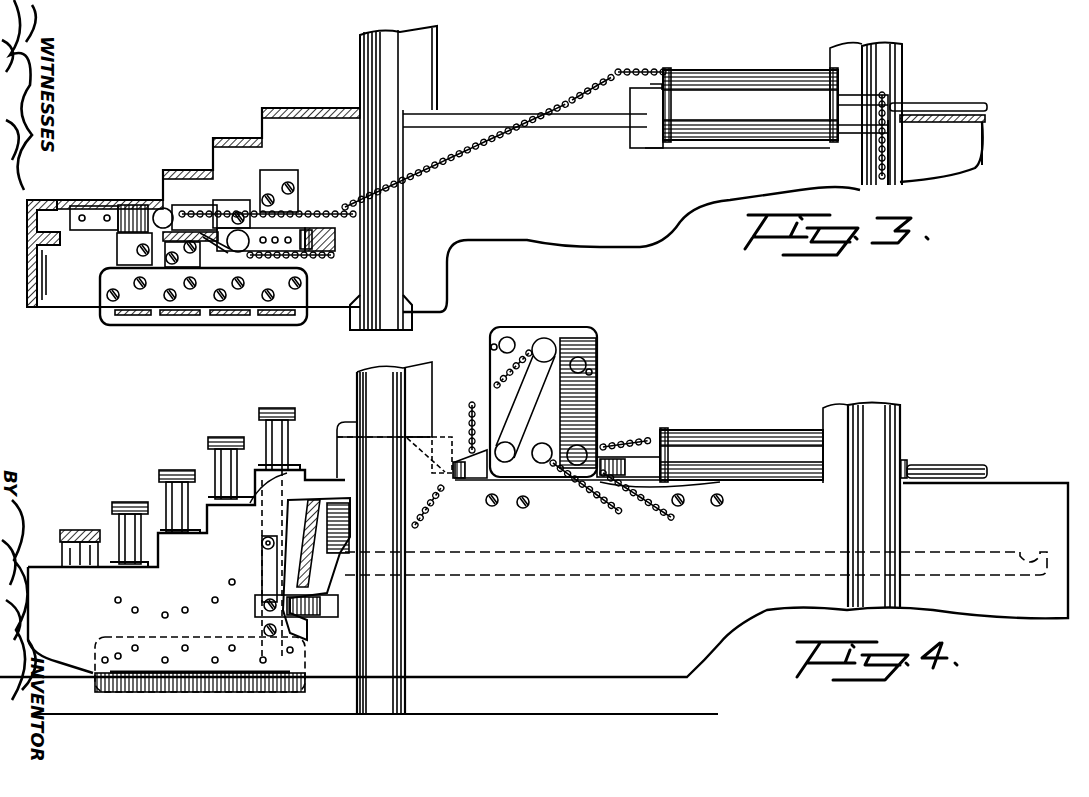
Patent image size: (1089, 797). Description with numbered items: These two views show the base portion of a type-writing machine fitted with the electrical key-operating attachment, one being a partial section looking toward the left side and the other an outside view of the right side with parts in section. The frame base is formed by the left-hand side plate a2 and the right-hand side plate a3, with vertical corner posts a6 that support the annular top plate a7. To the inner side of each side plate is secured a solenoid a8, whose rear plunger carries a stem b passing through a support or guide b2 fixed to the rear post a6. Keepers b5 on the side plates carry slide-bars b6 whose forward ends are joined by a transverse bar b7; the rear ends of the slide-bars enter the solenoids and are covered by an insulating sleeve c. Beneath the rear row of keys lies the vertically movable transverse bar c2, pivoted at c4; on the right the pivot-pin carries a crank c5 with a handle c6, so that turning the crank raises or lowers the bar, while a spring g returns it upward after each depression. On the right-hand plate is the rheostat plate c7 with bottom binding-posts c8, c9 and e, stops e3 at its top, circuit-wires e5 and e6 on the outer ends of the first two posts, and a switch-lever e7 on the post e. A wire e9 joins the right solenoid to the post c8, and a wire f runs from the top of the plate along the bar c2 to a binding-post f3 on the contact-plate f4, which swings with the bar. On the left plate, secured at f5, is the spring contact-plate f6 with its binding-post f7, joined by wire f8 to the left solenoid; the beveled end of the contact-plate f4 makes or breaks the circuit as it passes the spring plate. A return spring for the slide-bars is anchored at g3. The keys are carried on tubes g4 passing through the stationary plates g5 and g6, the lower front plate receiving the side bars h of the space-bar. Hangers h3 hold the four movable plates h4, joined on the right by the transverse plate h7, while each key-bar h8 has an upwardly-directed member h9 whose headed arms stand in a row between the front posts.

In FIG. 3, the left-hand side plate a2 is at (520, 210).
In FIG. 4, the right-hand side plate a3 is at (534, 592).
In FIG. 3, the vertical side or corner posts a6 is at (400, 58).
In FIG. 4, the vertical side or corner posts a6 is at (380, 643).
In FIG. 3, the annular top plate a7 is at (40, 205).
In FIG. 3, the solenoid a8 is at (712, 72).
In FIG. 4, the solenoid a8 is at (728, 442).
In FIG. 4, the stem b is at (932, 470).
In FIG. 3, the support or guide b2 is at (912, 106).
In FIG. 4, the support or guide b2 is at (908, 462).
In FIG. 4, the guides or keepers b5 is at (462, 480).
In FIG. 4, the slide-bars b6 is at (472, 482).
In FIG. 4, the transverse bar b7 is at (440, 437).
In FIG. 3, the insulating sleeve or covering c is at (630, 100).
In FIG. 4, the insulating sleeve or covering c is at (720, 482).
In FIG. 3, the bar c2 is at (322, 252).
In FIG. 4, the bar c2 is at (300, 607).
In FIG. 3, the pivot c4 is at (276, 242).
In FIG. 4, the pivot c4 is at (262, 606).
In FIG. 4, the crank c5 is at (262, 570).
In FIG. 4, the handle c6 is at (262, 543).
In FIG. 4, the plate c7 is at (578, 340).
In FIG. 4, the binding-post c8 is at (585, 448).
In FIG. 4, the binding-post c9 is at (542, 463).
In FIG. 4, the binding-post e is at (495, 480).
In FIG. 4, the stops e3 is at (508, 337).
In FIG. 4, the circuit-wire e5 is at (688, 525).
In FIG. 4, the circuit-wire e6 is at (594, 504).
In FIG. 4, the switch-lever e7 is at (525, 390).
In FIG. 4, the wire e9 is at (640, 442).
In FIG. 3, the wire f is at (311, 260).
In FIG. 4, the wire f is at (468, 417).
In FIG. 3, the binding-post f3 is at (236, 243).
In FIG. 3, the contact-plate f4 is at (285, 236).
In FIG. 3, the securing point f5 is at (95, 218).
In FIG. 3, the spring contact-plate f6 is at (178, 214).
In FIG. 3, the binding-post f7 is at (160, 208).
In FIG. 3, the wire f8 is at (462, 170).
In FIG. 4, the spring g is at (183, 535).
In FIG. 4, the securing point g3 is at (130, 502).
In FIG. 4, the tubes g4 is at (140, 532).
In FIG. 4, the top plate g5 is at (265, 492).
In FIG. 3, the plate g6 is at (272, 172).
In FIG. 4, the side bars h is at (62, 554).
In FIG. 3, the hangers or supports h3 is at (114, 324).
In FIG. 4, the hangers or supports h3 is at (194, 693).
In FIG. 4, the plates h4 is at (80, 530).
In FIG. 3, the transverse plate h7 is at (275, 316).
In FIG. 4, the transverse plate h7 is at (148, 672).
In FIG. 4, the key-bars h8 is at (568, 575).
In FIG. 4, the upwardly-directed member h9 is at (336, 456).